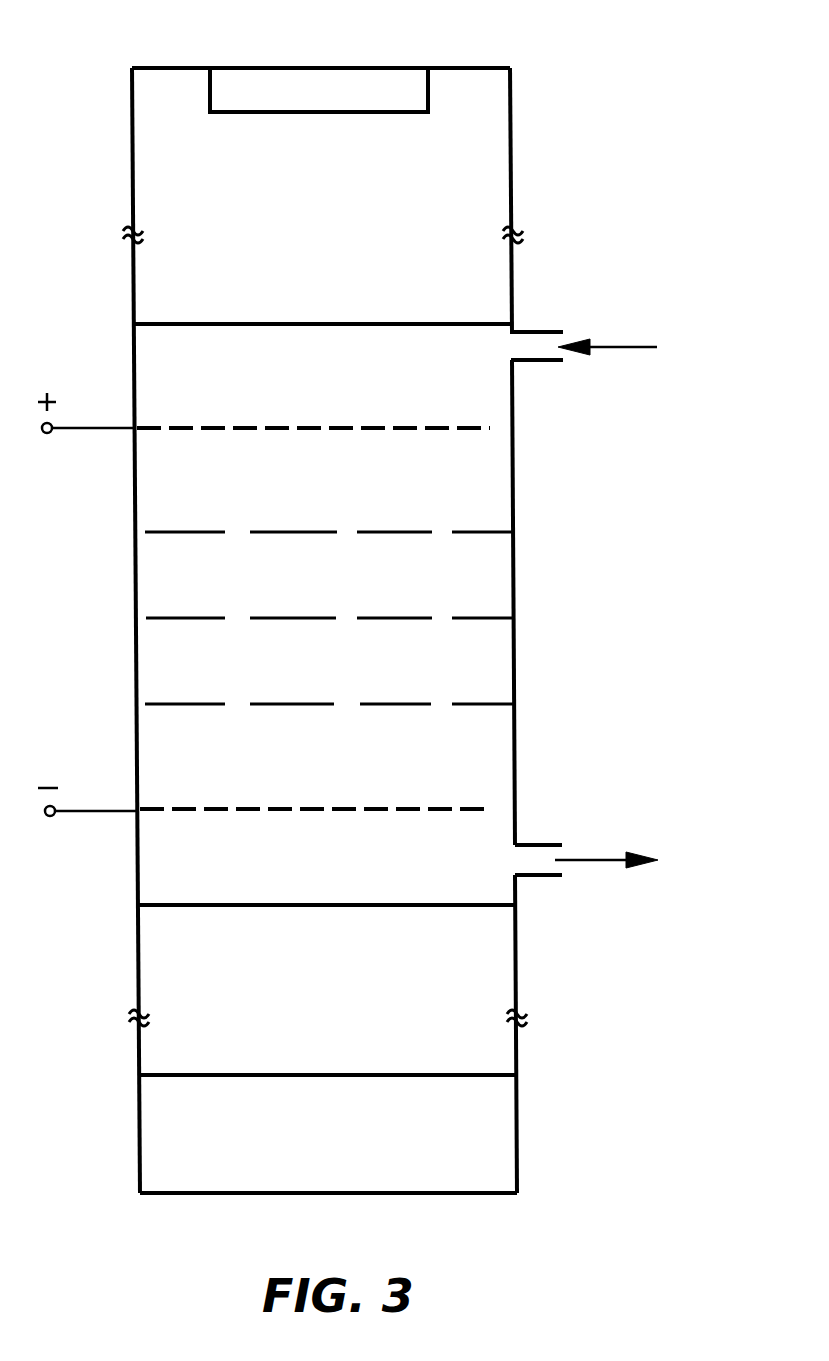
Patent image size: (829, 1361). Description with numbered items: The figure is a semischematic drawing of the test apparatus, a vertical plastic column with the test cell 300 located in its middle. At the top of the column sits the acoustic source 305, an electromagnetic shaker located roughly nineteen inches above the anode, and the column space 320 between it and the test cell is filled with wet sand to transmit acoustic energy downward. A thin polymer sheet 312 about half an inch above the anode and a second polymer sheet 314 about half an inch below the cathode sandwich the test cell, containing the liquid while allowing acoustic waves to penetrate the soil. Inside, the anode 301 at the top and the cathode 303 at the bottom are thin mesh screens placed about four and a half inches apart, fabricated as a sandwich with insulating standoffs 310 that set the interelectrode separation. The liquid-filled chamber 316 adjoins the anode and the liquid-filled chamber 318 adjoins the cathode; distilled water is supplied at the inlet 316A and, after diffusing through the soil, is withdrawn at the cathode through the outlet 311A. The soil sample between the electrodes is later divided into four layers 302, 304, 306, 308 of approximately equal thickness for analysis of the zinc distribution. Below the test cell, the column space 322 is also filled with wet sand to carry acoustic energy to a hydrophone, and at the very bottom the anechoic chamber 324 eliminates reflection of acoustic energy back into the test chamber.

The test cell 300 is at (512, 143).
The acoustic source 305 is at (336, 93).
The column space 320 is at (347, 228).
The polymer sheet (membrane) 312 is at (160, 324).
The inlet 316A is at (552, 332).
The chamber 316 is at (350, 390).
The anode electrode 301 is at (493, 428).
The first soil layer 302 is at (350, 483).
The insulating standoffs 310 is at (514, 560).
The second soil layer 304 is at (352, 585).
The third soil layer 306 is at (352, 672).
The fourth soil layer 308 is at (352, 760).
The cathode electrode 303 is at (493, 808).
The chamber 318 is at (350, 873).
The outlet port 311A is at (545, 875).
The polymer sheet (membrane) 314 is at (165, 905).
The column space 322 is at (354, 1008).
The anechoic chamber 324 is at (354, 1143).